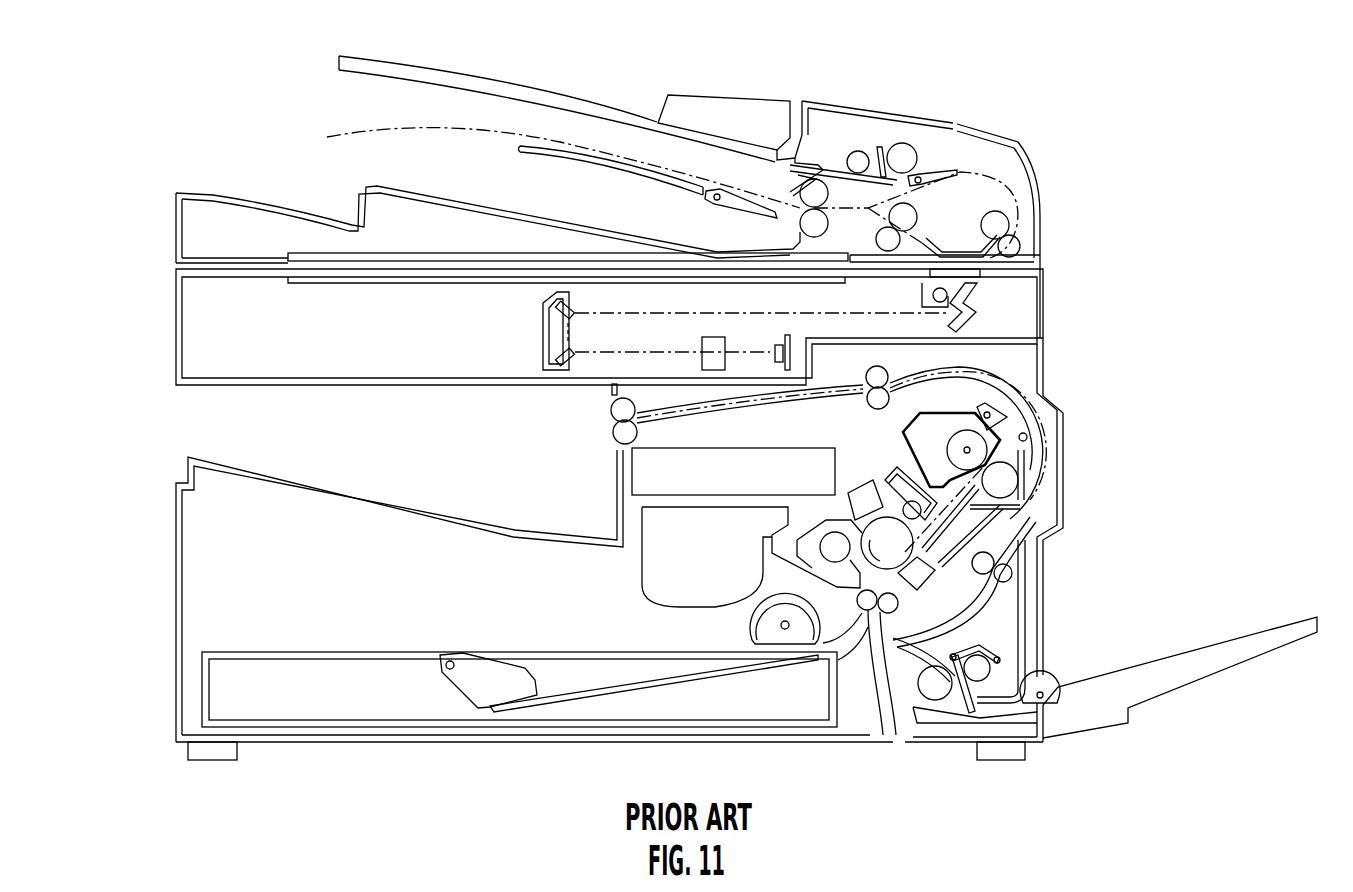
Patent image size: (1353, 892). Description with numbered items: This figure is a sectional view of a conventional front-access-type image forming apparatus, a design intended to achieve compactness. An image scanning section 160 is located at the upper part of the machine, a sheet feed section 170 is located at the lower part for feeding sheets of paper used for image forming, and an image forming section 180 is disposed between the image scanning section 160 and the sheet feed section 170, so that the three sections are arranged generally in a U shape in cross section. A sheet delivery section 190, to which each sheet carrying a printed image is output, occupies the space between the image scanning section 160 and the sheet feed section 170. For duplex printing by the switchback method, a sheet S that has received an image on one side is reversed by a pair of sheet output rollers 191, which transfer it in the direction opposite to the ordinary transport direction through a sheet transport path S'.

The image scanning section 160 is at (1130, 122).
The sheet feed section 170 is at (152, 652).
The image forming section 180 is at (1130, 420).
The sheet delivery section 190 is at (448, 455).
The pair of sheet output rollers 191 is at (608, 408).
The sheet S is at (841, 459).
The sheet transport path S' is at (993, 588).